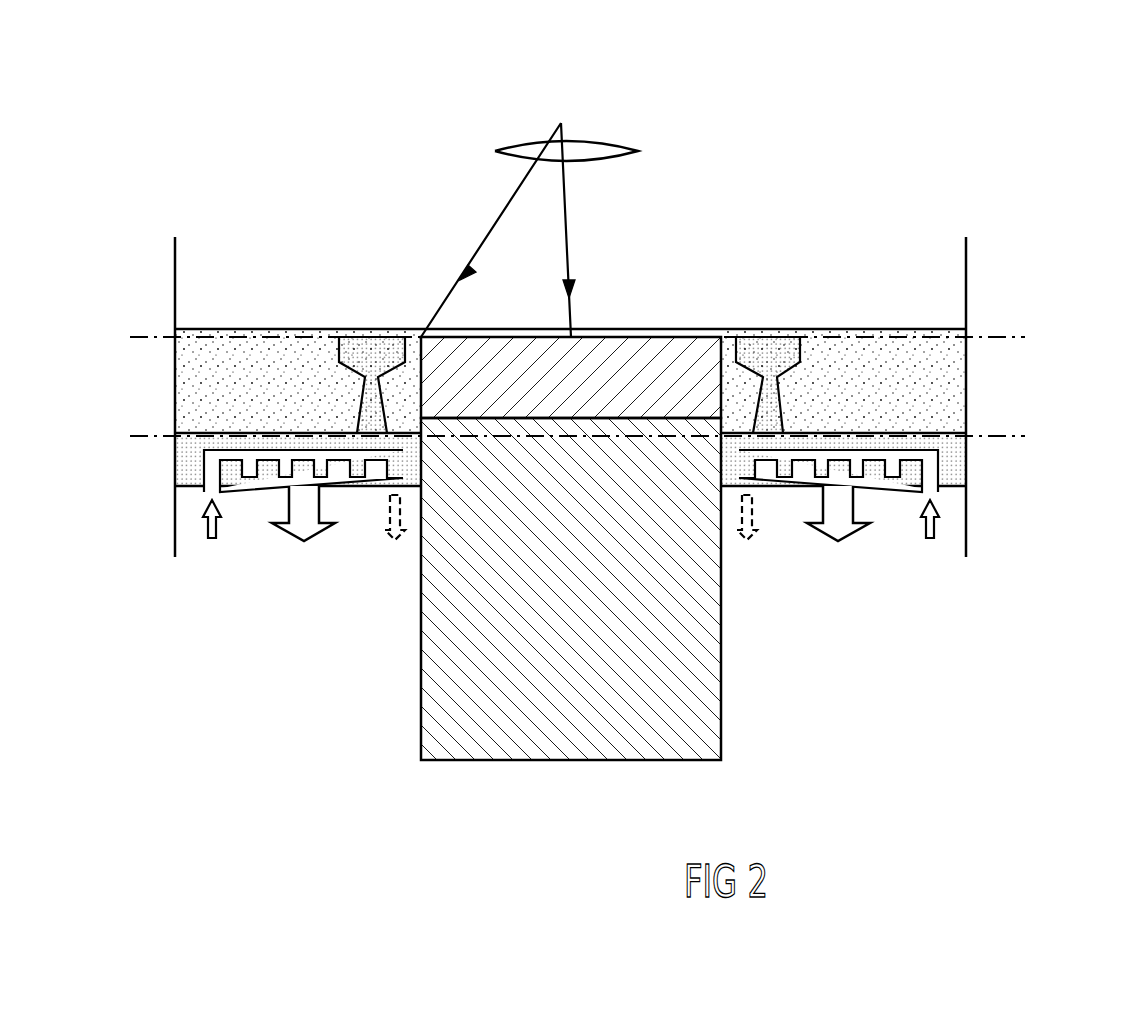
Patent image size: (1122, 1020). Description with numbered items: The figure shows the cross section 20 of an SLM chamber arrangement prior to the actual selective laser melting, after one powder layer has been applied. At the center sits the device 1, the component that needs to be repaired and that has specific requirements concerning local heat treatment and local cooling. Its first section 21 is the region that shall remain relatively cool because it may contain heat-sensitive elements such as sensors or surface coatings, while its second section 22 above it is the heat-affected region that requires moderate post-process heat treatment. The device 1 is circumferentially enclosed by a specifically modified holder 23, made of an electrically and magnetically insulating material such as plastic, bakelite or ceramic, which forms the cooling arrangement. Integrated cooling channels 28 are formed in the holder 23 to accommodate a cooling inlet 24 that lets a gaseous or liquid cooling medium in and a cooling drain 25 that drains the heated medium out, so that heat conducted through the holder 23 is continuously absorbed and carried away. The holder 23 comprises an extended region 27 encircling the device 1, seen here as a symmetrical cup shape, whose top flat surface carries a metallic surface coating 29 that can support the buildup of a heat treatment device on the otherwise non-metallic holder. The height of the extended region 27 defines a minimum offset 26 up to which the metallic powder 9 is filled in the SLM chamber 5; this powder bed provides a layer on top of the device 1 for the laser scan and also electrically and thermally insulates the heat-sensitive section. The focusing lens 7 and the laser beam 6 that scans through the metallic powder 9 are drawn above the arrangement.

The cross section 20 is at (252, 96).
The SLM chamber 5 is at (968, 261).
The minimum offset 26 is at (624, 382).
The metallic powder 9 is at (188, 385).
The holder 23 is at (960, 478).
The integrated cooling channels 28 is at (935, 466).
The extended region 27 is at (375, 350).
The metallic surface coating 29 is at (748, 337).
The device 1 is at (617, 545).
The first section 21 is at (585, 632).
The second section 22 is at (645, 360).
The cooling inlet 24 is at (932, 540).
The cooling drain 25 is at (747, 540).
The focusing lens 7 is at (590, 148).
The laser beam 6 is at (567, 226).